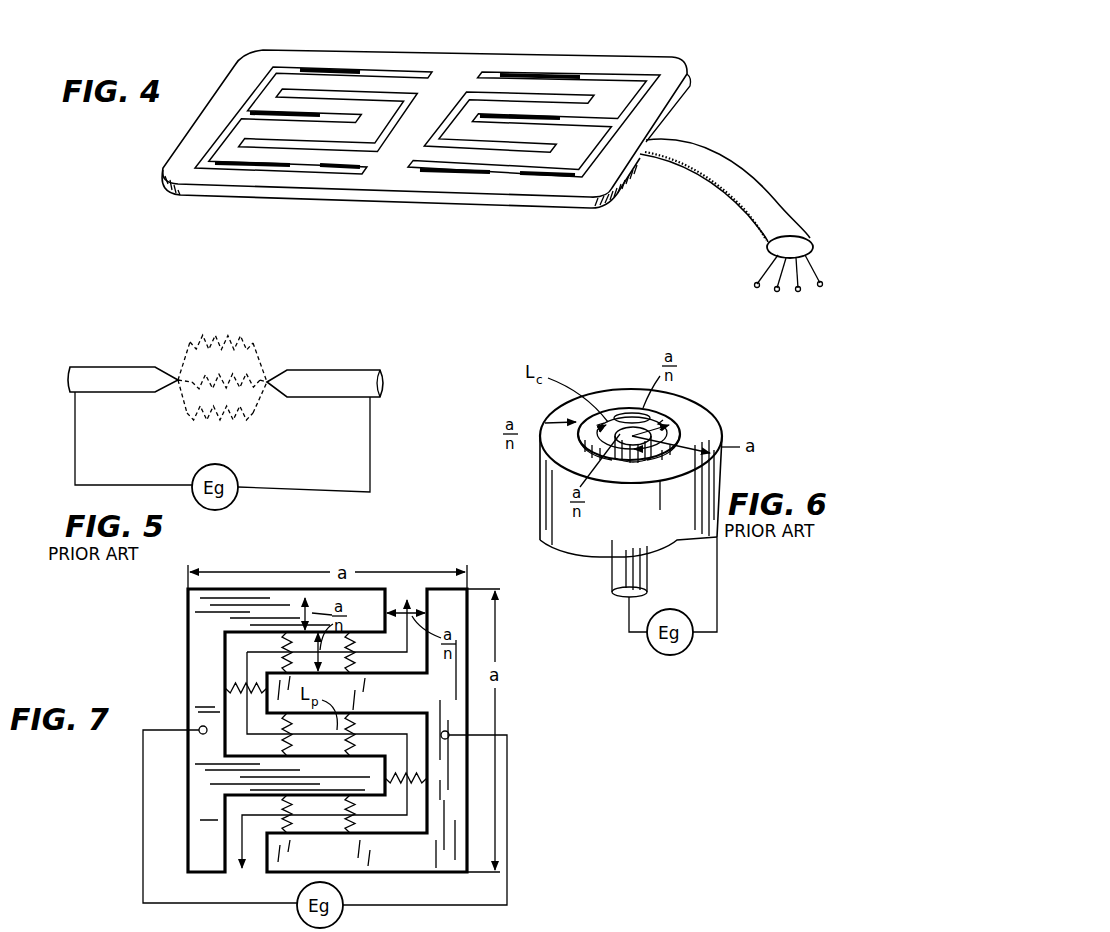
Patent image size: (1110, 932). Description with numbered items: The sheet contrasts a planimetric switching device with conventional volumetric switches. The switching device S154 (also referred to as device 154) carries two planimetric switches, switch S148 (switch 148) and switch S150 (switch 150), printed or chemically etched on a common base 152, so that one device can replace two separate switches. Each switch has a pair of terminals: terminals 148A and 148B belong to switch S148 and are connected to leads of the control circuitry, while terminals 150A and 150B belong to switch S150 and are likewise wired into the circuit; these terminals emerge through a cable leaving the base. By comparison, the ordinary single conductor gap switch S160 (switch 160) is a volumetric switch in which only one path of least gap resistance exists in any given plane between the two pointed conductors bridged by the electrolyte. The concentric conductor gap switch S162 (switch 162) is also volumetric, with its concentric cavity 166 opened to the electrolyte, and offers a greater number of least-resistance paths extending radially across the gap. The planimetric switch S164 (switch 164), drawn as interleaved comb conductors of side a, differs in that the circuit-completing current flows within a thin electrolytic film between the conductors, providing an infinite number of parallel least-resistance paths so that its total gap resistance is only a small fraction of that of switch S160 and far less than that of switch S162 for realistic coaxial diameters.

In FIG. 4, the switch 148 is at (298, 64).
In FIG. 4, the switch S148 is at (313, 97).
In FIG. 4, the switch 150 is at (522, 70).
In FIG. 4, the switch S150 is at (534, 90).
In FIG. 4, the common base 152 is at (427, 49).
In FIG. 4, the switching device 154 is at (330, 210).
In FIG. 4, the switching device S154 is at (401, 201).
In FIG. 4, the terminal 148A is at (775, 292).
In FIG. 4, the terminal 148B is at (755, 281).
In FIG. 4, the terminal 150A is at (798, 292).
In FIG. 4, the terminal 150B is at (822, 281).
In FIG. 5, the single conductor gap switch 160 is at (166, 340).
In FIG. 5, the single conductor gap switch S160 is at (225, 355).
In FIG. 6, the concentric conductor gap switch 162 is at (726, 418).
In FIG. 6, the concentric conductor gap switch S162 is at (655, 466).
In FIG. 6, the concentric cavity 166 is at (625, 412).
In FIG. 7, the planimetric switch 164 is at (181, 640).
In FIG. 7, the planimetric switch S164 is at (288, 730).